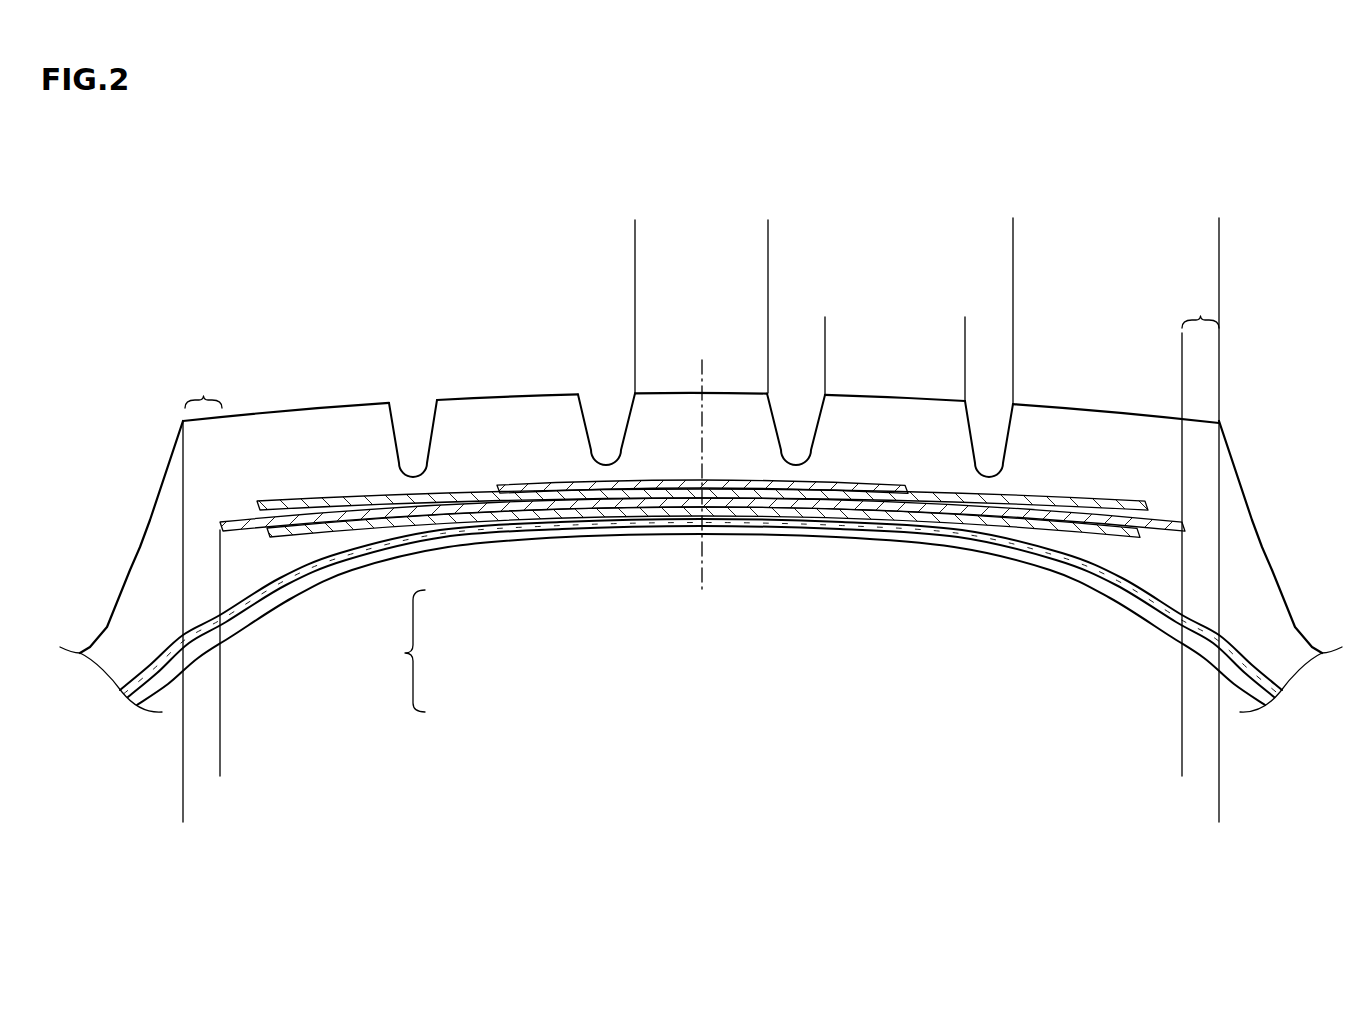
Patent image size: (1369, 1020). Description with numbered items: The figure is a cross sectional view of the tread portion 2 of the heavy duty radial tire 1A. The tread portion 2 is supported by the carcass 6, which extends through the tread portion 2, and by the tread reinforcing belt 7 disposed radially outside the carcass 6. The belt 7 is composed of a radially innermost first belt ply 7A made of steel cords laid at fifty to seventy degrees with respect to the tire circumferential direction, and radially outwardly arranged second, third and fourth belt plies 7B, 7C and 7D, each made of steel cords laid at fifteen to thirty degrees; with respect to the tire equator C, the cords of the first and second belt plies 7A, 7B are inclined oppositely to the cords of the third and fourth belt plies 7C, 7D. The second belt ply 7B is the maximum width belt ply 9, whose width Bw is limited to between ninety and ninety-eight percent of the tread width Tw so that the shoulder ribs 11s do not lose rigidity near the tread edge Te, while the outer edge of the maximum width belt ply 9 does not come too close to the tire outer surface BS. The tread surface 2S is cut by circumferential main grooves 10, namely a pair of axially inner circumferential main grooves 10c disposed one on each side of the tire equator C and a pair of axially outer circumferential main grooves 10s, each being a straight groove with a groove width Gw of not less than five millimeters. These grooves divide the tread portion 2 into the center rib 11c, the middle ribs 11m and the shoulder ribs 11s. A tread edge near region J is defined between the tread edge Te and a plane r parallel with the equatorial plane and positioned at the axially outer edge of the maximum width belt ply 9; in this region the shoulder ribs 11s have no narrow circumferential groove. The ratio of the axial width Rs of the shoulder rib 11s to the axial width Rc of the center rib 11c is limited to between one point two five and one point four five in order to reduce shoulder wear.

The tread portion 2 is at (973, 251).
The tread surface 2S is at (527, 397).
The heavy duty radial tire 1A is at (1249, 350).
The tire outer surface BS is at (1245, 500).
The tread edge Te is at (178, 418).
The tread edge near region J is at (702, 348).
The axially outer circumferential main groove 10s is at (413, 425).
The axially inner circumferential main groove 10c is at (736, 349).
The circumferential main groove 10 is at (796, 430).
The shoulder rib 11s is at (703, 348).
The middle rib 11m is at (478, 414).
The center rib 11c is at (670, 411).
The plane r is at (1182, 407).
The axial width of the center rib Rc is at (635, 227).
The groove width Gw is at (768, 323).
The axial width of the shoulder rib Rs is at (1013, 225).
The width of the maximum width belt ply Bw is at (1182, 768).
The tread width Tw is at (1219, 815).
The tire equator C is at (701, 491).
The tread reinforcing belt 7 is at (702, 596).
The first belt ply 7A is at (670, 513).
The second belt ply 7B is at (702, 588).
The maximum width belt ply 9 is at (635, 507).
The third belt ply 7C is at (603, 500).
The fourth belt ply 7D is at (567, 489).
The carcass 6 is at (1123, 588).